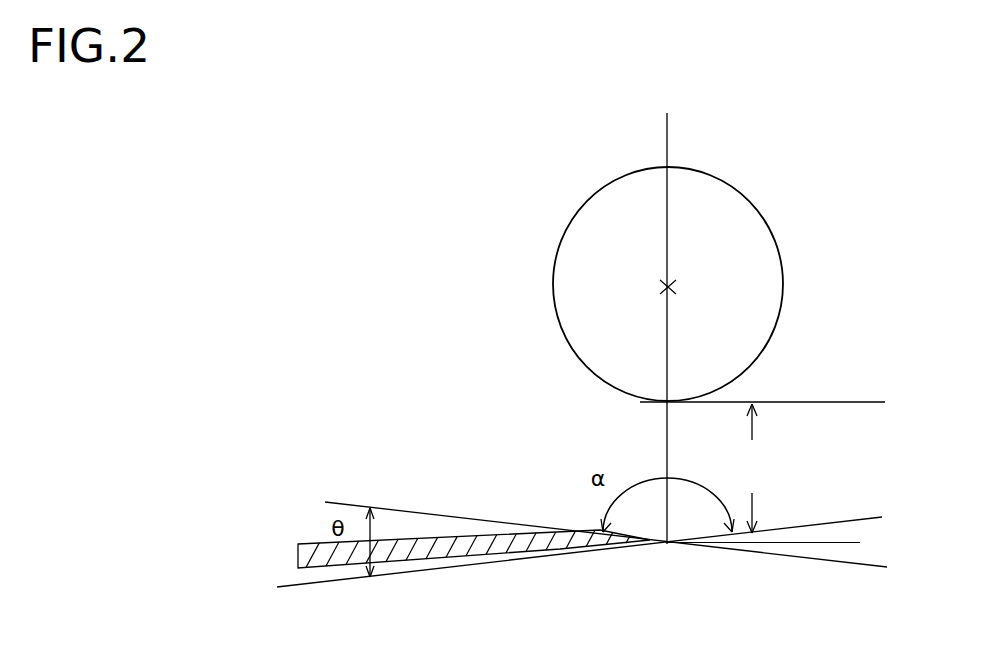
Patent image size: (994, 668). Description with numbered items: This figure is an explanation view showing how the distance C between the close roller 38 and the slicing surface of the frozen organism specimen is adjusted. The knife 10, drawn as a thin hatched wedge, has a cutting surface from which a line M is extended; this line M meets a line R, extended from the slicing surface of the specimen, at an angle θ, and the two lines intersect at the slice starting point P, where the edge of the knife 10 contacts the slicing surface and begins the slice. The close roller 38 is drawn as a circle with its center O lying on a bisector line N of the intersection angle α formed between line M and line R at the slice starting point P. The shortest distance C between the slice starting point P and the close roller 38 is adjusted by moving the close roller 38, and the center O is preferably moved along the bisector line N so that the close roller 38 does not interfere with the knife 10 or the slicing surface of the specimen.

The close roller 38 is at (557, 286).
The knife 10 is at (298, 549).
The bisector line N is at (667, 306).
The center of the close roller O is at (675, 289).
The distance C is at (754, 468).
The line extended from the cutting surface of the knife M is at (590, 520).
The line extended from the slicing surface of the organism specimen R is at (578, 550).
The slice starting point P is at (665, 547).